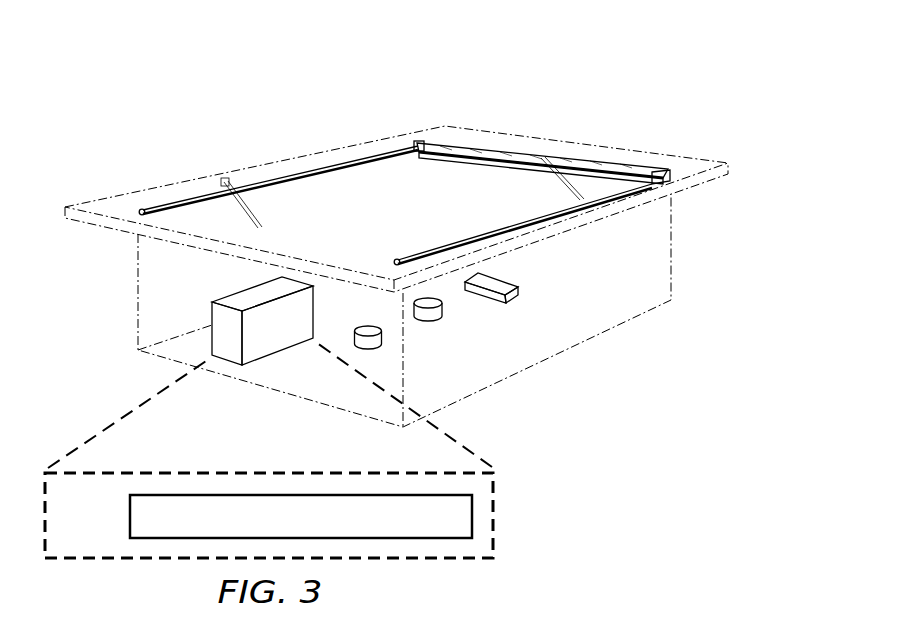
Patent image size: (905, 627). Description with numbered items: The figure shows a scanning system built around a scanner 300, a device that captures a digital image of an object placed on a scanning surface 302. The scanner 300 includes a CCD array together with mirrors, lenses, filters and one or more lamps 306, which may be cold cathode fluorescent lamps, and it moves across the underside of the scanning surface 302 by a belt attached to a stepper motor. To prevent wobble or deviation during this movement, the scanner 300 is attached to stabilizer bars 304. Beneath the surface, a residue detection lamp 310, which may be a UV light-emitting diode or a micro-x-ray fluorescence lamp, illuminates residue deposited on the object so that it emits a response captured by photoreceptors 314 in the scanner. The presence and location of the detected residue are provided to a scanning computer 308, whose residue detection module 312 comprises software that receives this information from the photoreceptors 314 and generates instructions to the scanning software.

The scanner 300 is at (432, 236).
The scanning surface 302 is at (322, 190).
The stabilizer bars 304 is at (487, 228).
The lamps 306 is at (353, 338).
The scanning computer 308 is at (212, 318).
The residue detection lamp 310 is at (445, 307).
The residue detection module 312 is at (130, 513).
The photoreceptors 314 is at (519, 289).